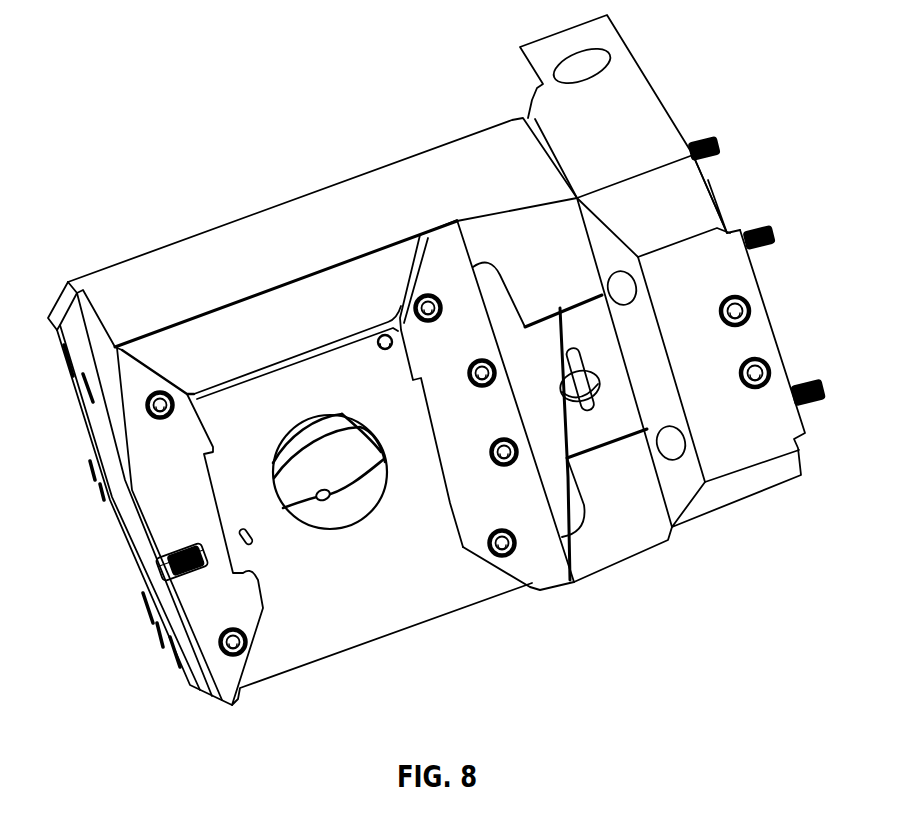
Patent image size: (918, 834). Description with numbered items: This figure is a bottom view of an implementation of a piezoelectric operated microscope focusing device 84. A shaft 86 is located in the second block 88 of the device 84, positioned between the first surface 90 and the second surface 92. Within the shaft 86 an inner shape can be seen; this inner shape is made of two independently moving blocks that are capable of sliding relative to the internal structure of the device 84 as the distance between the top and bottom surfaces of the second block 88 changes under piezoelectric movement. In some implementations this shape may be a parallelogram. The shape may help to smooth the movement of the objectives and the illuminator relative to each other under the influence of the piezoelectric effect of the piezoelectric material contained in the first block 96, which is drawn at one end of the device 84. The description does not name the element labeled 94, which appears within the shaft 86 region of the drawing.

The device 84 is at (187, 184).
The shaft 86 is at (338, 510).
The second block 88 is at (484, 142).
The first surface 90 is at (107, 266).
The second surface 92 is at (450, 588).
The ball 94 is at (343, 483).
The first block 96 is at (662, 123).